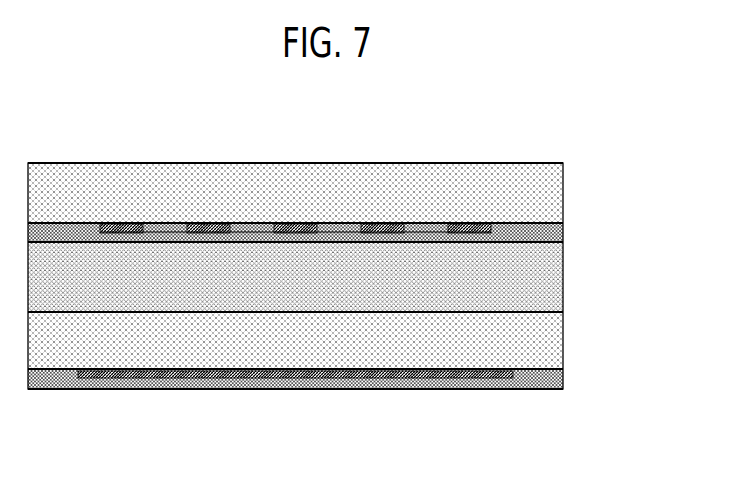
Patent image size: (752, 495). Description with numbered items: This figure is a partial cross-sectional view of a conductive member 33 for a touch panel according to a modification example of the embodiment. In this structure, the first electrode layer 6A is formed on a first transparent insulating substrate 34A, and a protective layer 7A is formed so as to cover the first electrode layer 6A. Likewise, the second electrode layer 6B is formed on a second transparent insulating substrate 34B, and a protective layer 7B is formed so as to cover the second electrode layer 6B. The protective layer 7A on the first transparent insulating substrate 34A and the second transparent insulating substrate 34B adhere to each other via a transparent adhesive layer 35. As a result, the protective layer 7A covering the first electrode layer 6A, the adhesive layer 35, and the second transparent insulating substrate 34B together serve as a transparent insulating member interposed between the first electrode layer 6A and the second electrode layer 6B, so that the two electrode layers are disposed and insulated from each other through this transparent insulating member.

The conductive member 33 is at (536, 145).
The first transparent insulating substrate 34A is at (553, 190).
The protective layer 7A is at (553, 235).
The first electrode layer 6A is at (122, 226).
The transparent adhesive layer 35 is at (555, 278).
The second transparent insulating substrate 34B is at (556, 337).
The protective layer 7B is at (556, 382).
The second electrode layer 6B is at (165, 379).